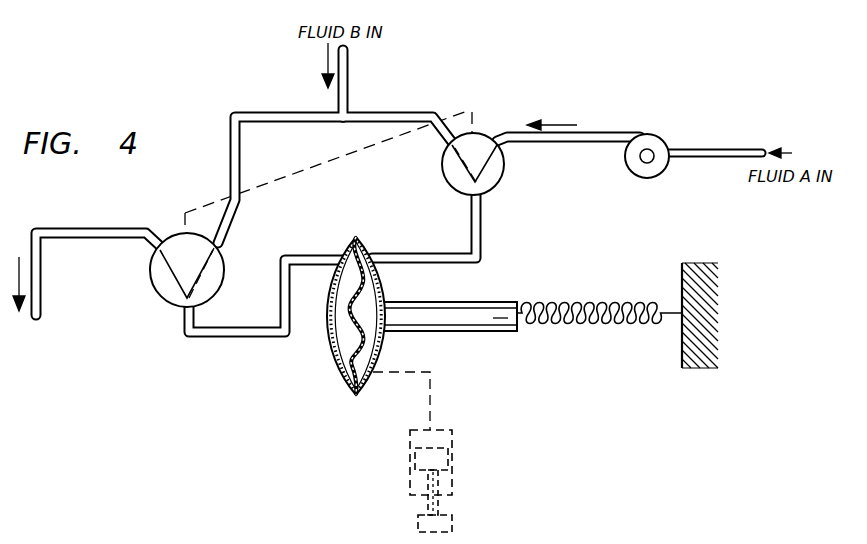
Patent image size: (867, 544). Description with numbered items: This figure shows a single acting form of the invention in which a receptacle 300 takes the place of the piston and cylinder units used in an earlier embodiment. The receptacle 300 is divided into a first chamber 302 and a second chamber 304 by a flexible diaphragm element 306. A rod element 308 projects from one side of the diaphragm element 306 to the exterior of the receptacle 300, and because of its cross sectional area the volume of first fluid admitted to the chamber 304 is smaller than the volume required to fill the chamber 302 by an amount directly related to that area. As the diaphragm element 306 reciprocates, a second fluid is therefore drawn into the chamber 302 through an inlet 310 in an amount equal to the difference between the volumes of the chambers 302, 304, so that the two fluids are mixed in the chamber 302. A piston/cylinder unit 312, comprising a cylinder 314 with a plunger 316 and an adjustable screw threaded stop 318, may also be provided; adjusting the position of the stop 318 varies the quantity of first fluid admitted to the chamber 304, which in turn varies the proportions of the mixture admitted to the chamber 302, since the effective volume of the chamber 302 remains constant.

The receptacle 300 is at (353, 317).
The chamber 302 is at (341, 313).
The chamber 304 is at (381, 289).
The flexible diaphragm element 306 is at (352, 357).
The rod element 308 is at (496, 332).
The inlet 310 is at (349, 84).
The piston/cylinder unit 312 is at (460, 441).
The cylinder 314 is at (450, 467).
The plunger 316 is at (417, 462).
The adjustable screw threaded stop 318 is at (438, 507).